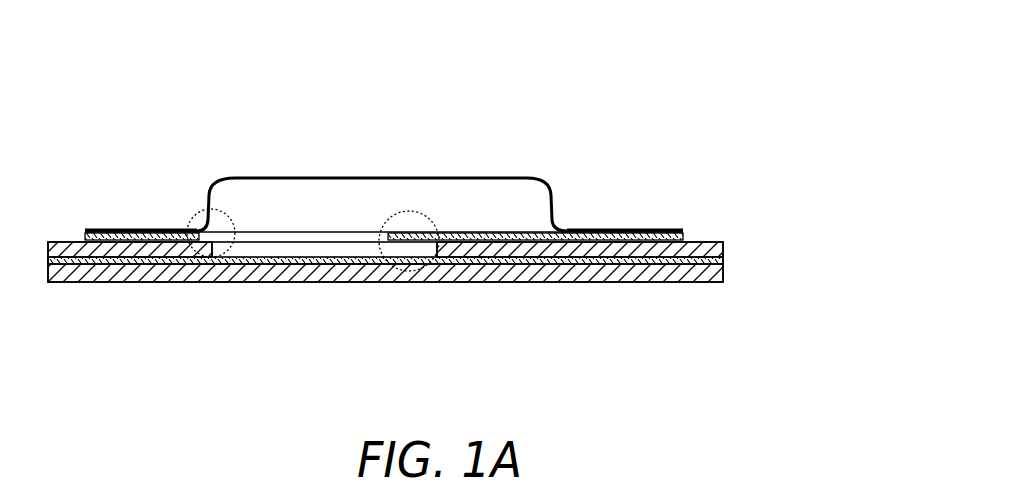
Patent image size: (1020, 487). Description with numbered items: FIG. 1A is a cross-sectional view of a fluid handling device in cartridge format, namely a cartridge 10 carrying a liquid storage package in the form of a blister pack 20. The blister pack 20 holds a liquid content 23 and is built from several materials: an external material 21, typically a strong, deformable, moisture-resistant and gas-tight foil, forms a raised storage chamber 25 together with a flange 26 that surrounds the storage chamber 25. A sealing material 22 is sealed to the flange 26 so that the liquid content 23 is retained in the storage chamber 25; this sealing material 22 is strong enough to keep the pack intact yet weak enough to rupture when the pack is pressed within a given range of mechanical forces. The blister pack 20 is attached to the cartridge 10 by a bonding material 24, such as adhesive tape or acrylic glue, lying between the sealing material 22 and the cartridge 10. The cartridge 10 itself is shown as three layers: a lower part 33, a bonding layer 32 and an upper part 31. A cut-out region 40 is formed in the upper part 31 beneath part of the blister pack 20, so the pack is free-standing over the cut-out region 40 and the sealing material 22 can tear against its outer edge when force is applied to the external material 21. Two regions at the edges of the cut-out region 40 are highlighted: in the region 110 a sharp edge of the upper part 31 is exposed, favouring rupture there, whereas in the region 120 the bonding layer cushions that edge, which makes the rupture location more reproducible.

The cartridge 10 is at (436, 270).
The blister pack 20 is at (384, 126).
The external material 21 is at (483, 177).
The sealing material 22 is at (262, 235).
The liquid content 23 is at (330, 200).
The bonding material 24 is at (683, 238).
The storage chamber 25 is at (497, 222).
The flange 26 is at (632, 228).
The upper part 31 is at (723, 240).
The bonding layer 32 is at (723, 258).
The lower part 33 is at (697, 275).
The cut-out region 40 is at (285, 252).
The rupture region 110 is at (197, 213).
The cushioned edge region 120 is at (417, 272).